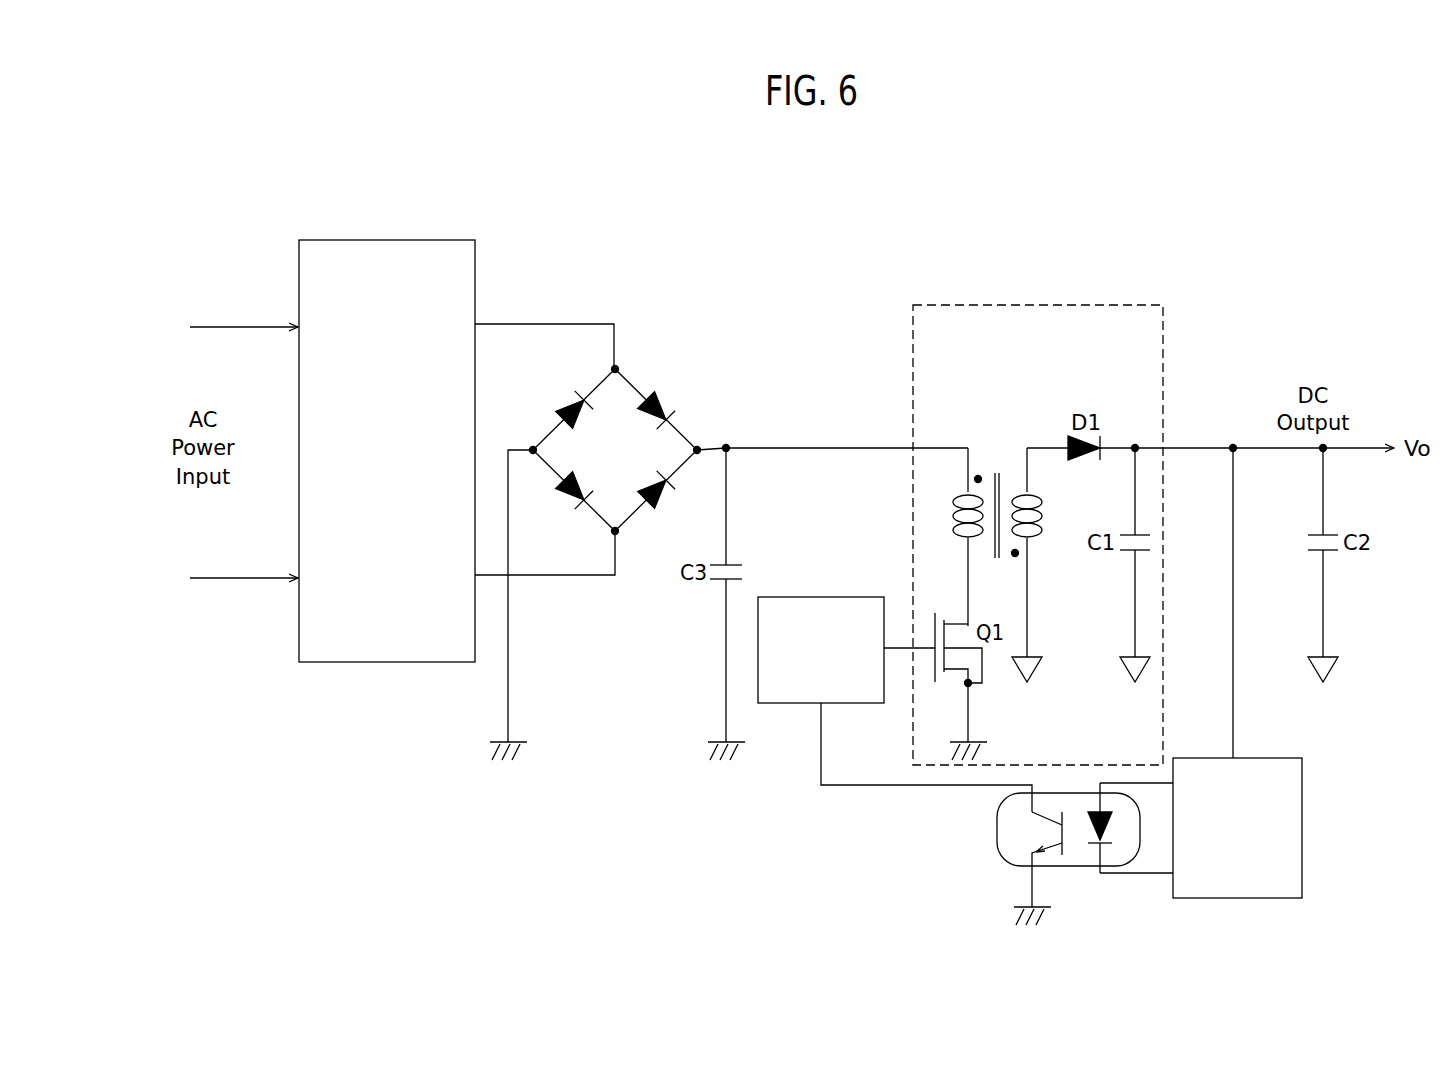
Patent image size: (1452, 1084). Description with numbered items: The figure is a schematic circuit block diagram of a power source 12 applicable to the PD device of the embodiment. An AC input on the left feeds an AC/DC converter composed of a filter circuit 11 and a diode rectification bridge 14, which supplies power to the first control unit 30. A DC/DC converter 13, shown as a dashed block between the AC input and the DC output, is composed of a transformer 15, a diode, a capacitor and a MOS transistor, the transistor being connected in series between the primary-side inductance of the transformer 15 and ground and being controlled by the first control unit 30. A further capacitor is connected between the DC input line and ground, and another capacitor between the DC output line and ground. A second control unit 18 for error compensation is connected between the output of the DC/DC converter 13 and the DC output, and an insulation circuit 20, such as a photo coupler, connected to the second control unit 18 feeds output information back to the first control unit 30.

The filter circuit 11 is at (388, 240).
The power source 12 is at (855, 252).
The DC/DC converter 13 is at (1043, 305).
The diode rectification bridge 14 is at (645, 357).
The transformer 15 is at (997, 412).
The control unit 2 18 is at (1302, 830).
The insulation circuit 20 is at (997, 830).
The control unit 1 30 is at (830, 597).